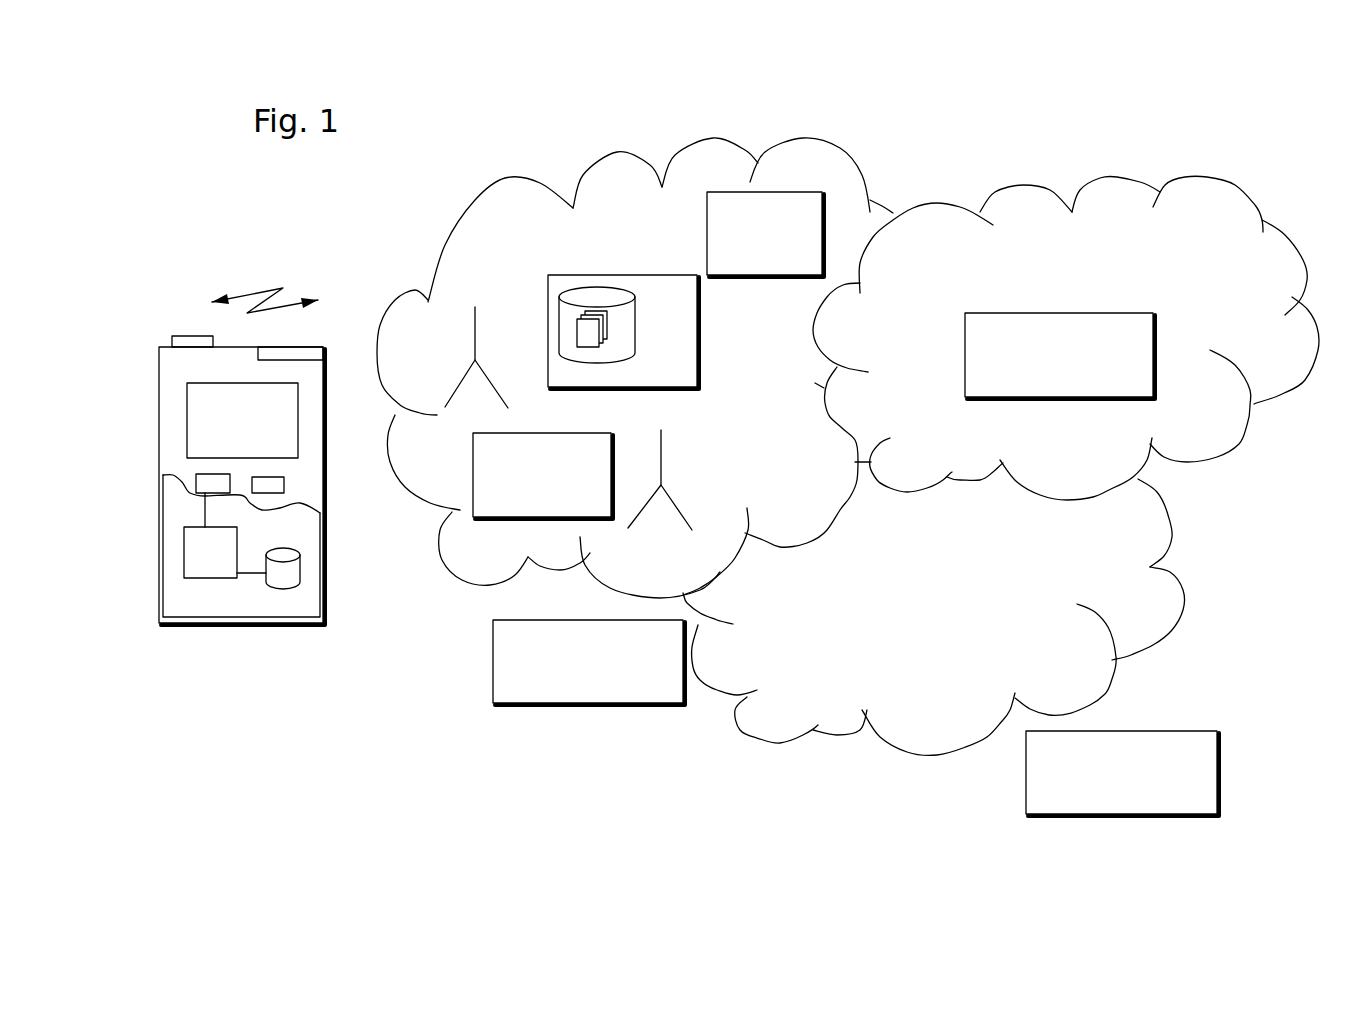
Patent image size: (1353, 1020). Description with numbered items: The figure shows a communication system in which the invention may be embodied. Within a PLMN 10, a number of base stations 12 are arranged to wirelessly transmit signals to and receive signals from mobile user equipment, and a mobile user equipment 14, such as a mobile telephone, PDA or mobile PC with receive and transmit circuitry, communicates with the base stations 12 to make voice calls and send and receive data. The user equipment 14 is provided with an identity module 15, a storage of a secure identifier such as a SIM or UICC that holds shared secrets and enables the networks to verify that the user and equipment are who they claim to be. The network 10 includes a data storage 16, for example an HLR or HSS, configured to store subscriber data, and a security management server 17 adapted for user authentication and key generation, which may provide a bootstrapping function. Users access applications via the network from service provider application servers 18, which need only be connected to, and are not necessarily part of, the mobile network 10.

The PLMN 10 is at (591, 245).
The base station 12 is at (475, 360).
The mobile user equipment 14 is at (168, 387).
The identity module 15 is at (205, 551).
The data storage 16 is at (560, 277).
The security management server 17 is at (505, 502).
The service provider application server 18 is at (804, 236).